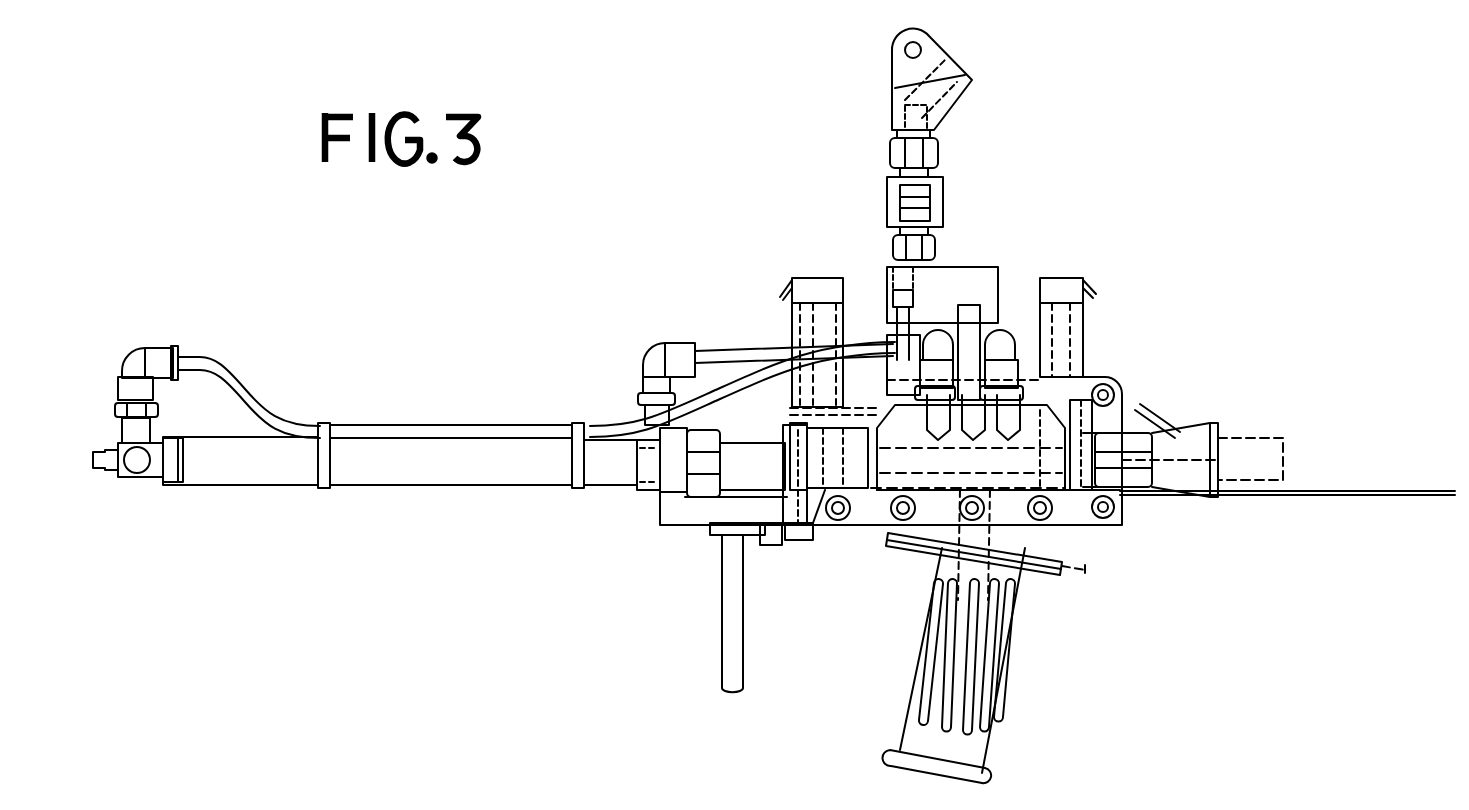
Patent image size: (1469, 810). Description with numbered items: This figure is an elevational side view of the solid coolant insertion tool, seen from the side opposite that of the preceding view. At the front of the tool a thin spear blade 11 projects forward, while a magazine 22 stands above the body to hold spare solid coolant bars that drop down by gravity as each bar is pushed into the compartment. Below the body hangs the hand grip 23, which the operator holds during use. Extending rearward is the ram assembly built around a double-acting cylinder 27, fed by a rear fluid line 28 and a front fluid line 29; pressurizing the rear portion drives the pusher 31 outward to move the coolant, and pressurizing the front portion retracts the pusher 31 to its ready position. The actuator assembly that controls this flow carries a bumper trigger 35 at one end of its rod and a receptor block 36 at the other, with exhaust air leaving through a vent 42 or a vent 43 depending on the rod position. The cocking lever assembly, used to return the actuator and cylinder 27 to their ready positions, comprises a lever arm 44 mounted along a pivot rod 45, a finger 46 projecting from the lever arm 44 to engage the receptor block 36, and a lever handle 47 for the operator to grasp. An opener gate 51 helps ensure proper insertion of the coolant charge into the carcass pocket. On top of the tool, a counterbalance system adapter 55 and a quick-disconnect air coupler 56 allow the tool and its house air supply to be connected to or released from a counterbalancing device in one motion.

The spear blade 11 is at (1310, 497).
The magazine 22 is at (1060, 283).
The hand grip 23 is at (970, 742).
The double-acting cylinder 27 is at (404, 470).
The rear fluid line 28 is at (265, 410).
The front fluid line 29 is at (728, 358).
The pusher 31 is at (762, 450).
The bumper trigger 35 is at (1213, 437).
The receptor block 36 is at (862, 523).
The vent 42 is at (1030, 460).
The vent 43 is at (915, 465).
The lever arm 44 is at (752, 535).
The pivot rod 45 is at (768, 545).
The finger 46 is at (808, 525).
The lever handle 47 is at (720, 612).
The opener gate 51 is at (1122, 407).
The counterbalance system adapter 55 is at (893, 57).
The quick-disconnect air coupler 56 is at (943, 213).